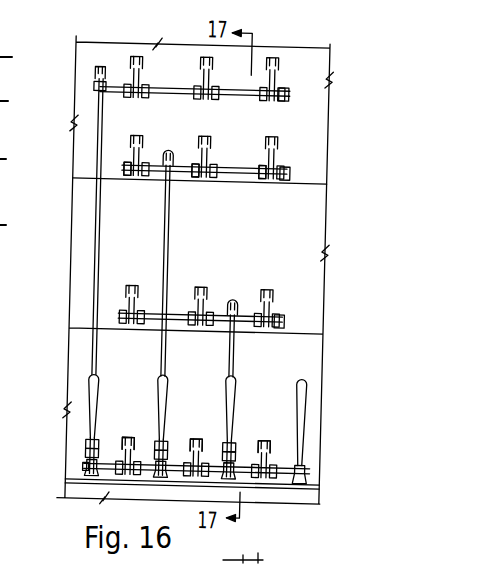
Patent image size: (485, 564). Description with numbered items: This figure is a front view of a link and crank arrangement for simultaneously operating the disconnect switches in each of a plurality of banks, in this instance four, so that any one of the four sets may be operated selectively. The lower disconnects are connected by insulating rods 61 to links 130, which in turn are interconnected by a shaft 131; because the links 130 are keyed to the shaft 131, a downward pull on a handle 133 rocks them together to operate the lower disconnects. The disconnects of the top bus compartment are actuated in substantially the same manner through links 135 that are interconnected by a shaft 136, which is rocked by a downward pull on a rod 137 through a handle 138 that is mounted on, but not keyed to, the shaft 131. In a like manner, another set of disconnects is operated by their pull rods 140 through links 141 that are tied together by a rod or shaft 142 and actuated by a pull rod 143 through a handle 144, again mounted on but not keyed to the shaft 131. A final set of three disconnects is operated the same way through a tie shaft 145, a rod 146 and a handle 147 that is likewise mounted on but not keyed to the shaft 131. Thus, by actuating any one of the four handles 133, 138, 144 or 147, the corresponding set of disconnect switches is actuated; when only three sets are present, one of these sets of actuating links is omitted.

The insulating rods 61 is at (132, 441).
The links 130 is at (143, 462).
The shaft 131 is at (294, 473).
The handle 133 is at (312, 386).
The links 135 is at (134, 304).
The shaft 136 is at (183, 310).
The rod 137 is at (244, 346).
The handle 138 is at (237, 386).
The pull rods 140 is at (134, 135).
The links 141 is at (126, 151).
The rod or shaft 142 is at (237, 165).
The pull rod 143 is at (169, 200).
The handle 144 is at (170, 388).
The tie shaft 145 is at (171, 85).
The rod 146 is at (103, 176).
The handle 147 is at (100, 390).